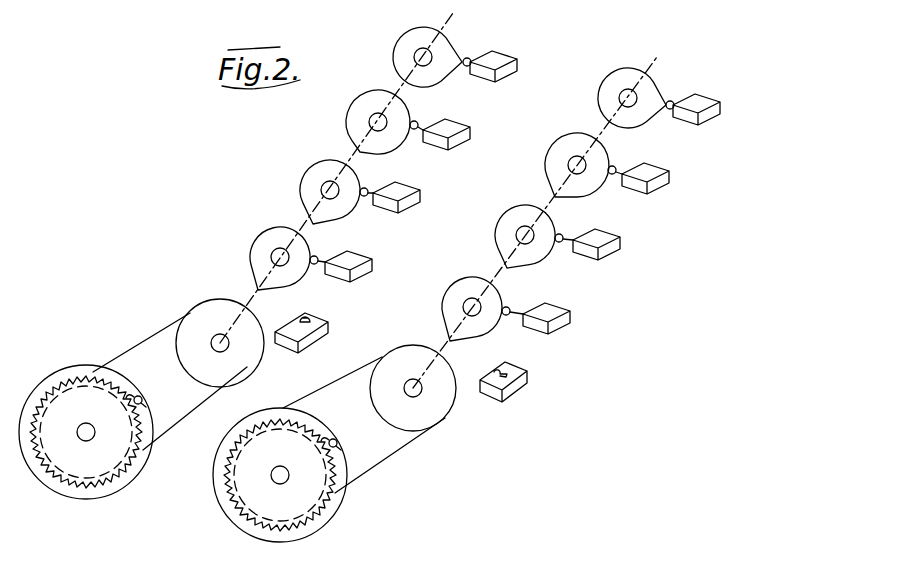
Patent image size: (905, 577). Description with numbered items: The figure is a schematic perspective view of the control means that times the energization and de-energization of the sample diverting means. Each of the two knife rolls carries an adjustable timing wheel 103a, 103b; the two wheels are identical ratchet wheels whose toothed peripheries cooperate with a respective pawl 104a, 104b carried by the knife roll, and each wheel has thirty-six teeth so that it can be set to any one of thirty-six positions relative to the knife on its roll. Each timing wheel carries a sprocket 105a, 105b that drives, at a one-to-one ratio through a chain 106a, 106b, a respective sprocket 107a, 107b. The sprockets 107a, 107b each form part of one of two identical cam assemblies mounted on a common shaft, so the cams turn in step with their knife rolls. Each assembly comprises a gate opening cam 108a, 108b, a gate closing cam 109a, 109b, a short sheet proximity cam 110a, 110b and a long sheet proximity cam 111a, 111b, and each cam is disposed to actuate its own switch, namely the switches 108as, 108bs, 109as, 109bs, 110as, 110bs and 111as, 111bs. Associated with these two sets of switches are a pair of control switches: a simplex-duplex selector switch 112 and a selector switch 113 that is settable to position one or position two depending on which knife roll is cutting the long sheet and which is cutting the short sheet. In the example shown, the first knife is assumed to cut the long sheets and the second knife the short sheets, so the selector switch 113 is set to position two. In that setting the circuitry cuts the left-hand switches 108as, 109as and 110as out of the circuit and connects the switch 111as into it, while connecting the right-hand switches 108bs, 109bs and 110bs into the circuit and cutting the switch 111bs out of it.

The adjustable timing wheel 103a is at (86, 378).
The adjustable timing wheel 103b is at (270, 527).
The pawl 104a is at (143, 397).
The pawl 104b is at (338, 440).
The sprocket 105a is at (83, 492).
The sprocket 105b is at (297, 522).
The chain 106a is at (170, 433).
The chain 106b is at (400, 451).
The sprocket 107a is at (242, 364).
The sprocket 107b is at (442, 412).
The gate opening cam 108a is at (262, 255).
The gate opening cam 108b is at (448, 303).
The switch 108as is at (360, 265).
The switch 108bs is at (553, 317).
The gate closing cam 109a is at (308, 183).
The gate closing cam 109b is at (507, 232).
The switch 109as is at (405, 197).
The switch 109bs is at (608, 240).
The short sheet proximity cam 110a is at (345, 121).
The short sheet proximity cam 110b is at (543, 167).
The switch 110as is at (452, 133).
The switch 110bs is at (661, 174).
The long sheet proximity cam 111a is at (403, 52).
The long sheet proximity cam 111b is at (608, 94).
The switch 111as is at (522, 44).
The switch 111bs is at (700, 102).
The simplex-duplex selector switch 112 is at (524, 384).
The selector switch 113 is at (322, 340).